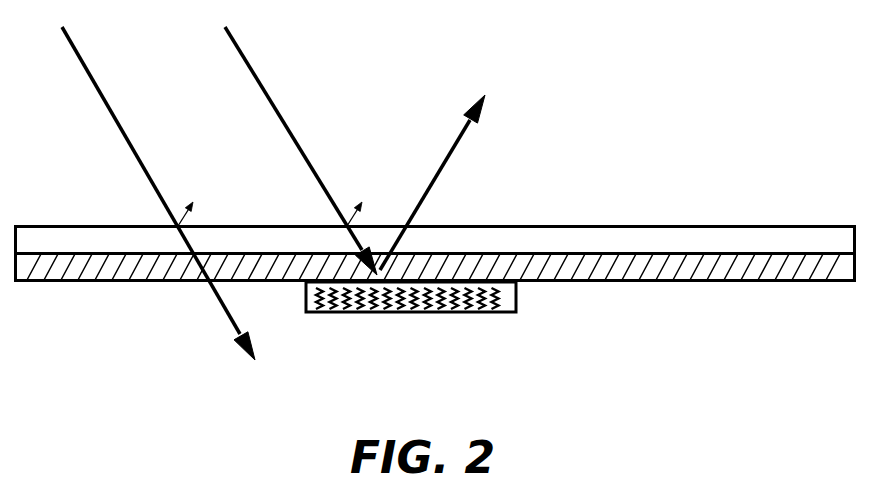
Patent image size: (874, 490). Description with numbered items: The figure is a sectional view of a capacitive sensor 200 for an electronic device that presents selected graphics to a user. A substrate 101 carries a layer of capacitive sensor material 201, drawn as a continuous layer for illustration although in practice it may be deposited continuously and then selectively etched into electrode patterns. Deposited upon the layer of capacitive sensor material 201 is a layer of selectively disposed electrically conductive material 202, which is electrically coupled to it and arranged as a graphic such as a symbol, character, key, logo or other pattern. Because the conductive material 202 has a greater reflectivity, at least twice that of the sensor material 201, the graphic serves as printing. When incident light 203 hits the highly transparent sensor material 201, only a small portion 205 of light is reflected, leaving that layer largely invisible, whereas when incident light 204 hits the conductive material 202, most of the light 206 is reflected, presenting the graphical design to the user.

The substrate 101 is at (587, 238).
The capacitive sensor 200 is at (213, 410).
The layer of capacitive sensor material 201 is at (592, 269).
The layer of selectively disposed electrically conductive material 202 is at (473, 313).
The incident light 203 is at (100, 85).
The incident light 204 is at (260, 80).
The small portion of light 205 is at (231, 247).
The reflected light 206 is at (430, 180).